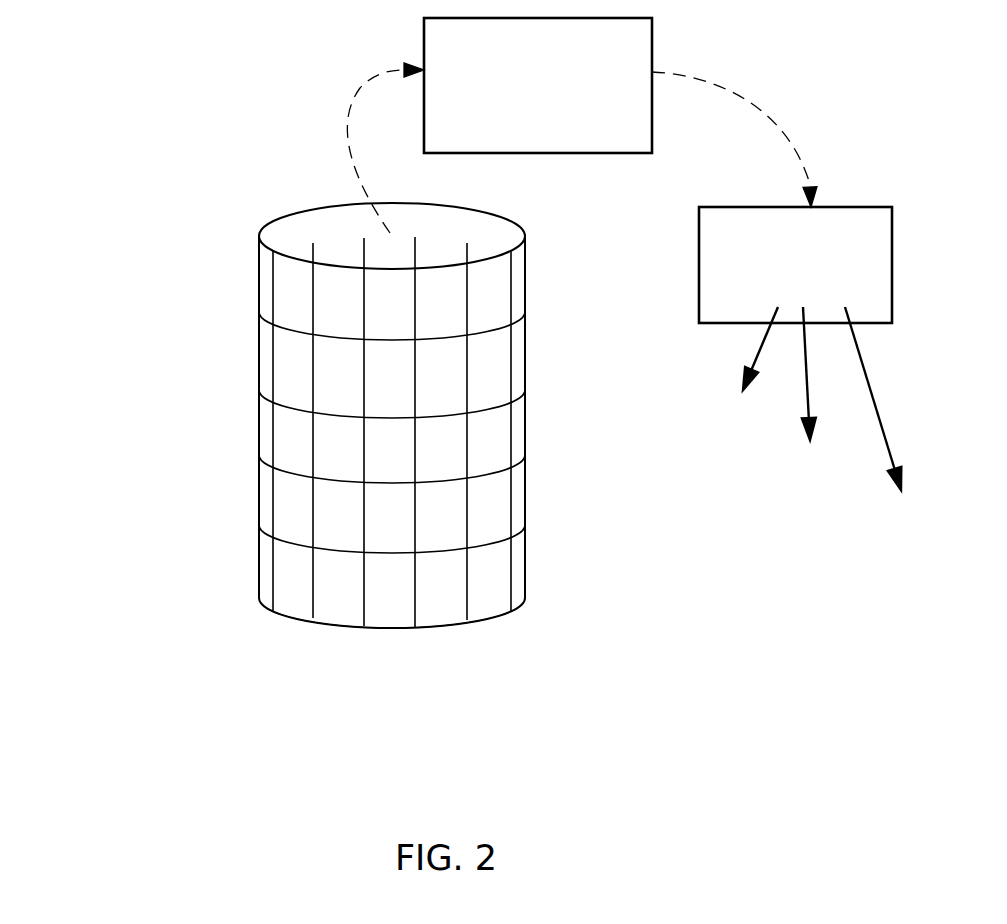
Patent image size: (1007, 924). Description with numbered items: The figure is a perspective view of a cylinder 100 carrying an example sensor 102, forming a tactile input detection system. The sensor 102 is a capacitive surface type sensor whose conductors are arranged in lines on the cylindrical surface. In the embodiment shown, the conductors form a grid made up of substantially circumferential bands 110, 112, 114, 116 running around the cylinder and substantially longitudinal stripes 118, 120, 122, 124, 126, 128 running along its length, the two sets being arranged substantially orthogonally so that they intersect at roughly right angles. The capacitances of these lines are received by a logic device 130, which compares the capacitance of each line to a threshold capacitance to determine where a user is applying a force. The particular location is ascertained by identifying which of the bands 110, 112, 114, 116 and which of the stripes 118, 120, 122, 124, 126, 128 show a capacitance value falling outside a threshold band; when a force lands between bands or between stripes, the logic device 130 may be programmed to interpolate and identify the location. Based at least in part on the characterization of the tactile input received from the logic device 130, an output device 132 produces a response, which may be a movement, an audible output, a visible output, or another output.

The cylinder 100 is at (139, 191).
The sensor 102 is at (240, 372).
The circumferential band 110 is at (488, 323).
The circumferential band 112 is at (488, 403).
The circumferential band 114 is at (488, 470).
The circumferential band 116 is at (488, 537).
The longitudinal stripe 118 is at (273, 600).
The longitudinal stripe 120 is at (313, 592).
The longitudinal stripe 122 is at (364, 607).
The longitudinal stripe 124 is at (415, 585).
The longitudinal stripe 126 is at (467, 605).
The longitudinal stripe 128 is at (511, 597).
The logic device 130 is at (635, 125).
The output device 132 is at (727, 310).